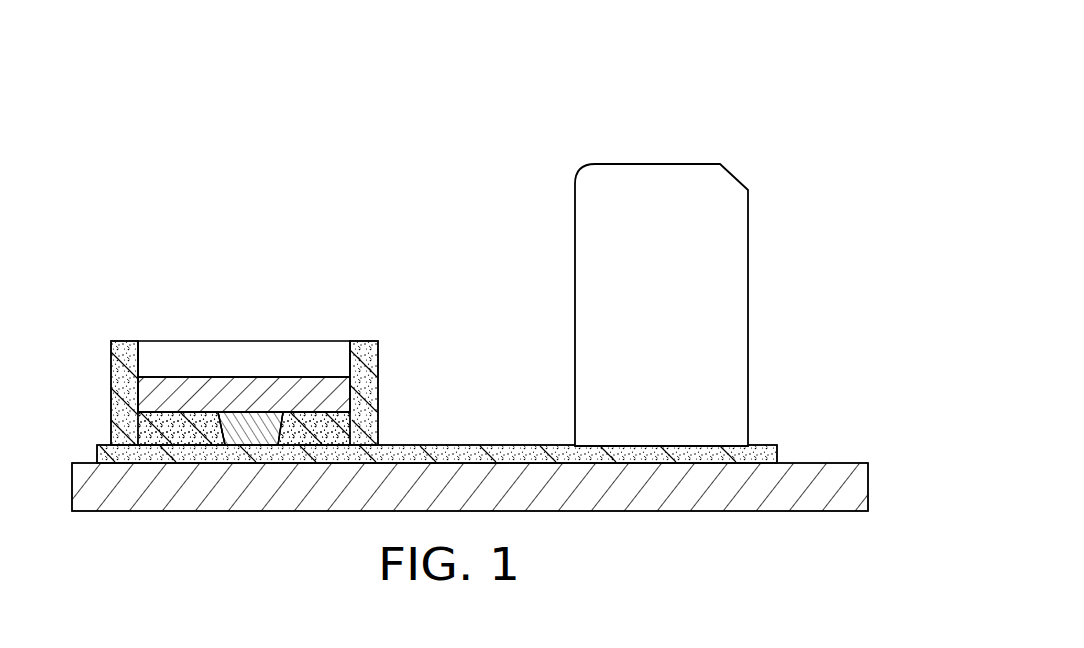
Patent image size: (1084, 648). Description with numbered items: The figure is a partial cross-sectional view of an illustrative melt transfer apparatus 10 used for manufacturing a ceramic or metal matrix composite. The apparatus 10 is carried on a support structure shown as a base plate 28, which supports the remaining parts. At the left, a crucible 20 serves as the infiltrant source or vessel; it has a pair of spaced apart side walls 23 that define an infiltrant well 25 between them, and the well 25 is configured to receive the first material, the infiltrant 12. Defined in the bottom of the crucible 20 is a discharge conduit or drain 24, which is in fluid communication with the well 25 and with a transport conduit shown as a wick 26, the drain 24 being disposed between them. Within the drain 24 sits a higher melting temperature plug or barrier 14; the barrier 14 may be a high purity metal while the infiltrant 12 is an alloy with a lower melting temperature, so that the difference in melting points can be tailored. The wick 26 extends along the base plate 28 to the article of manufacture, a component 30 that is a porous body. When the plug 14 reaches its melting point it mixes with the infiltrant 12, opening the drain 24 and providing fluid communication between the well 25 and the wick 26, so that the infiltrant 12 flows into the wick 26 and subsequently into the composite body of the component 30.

The apparatus 10 is at (472, 282).
The infiltrant 12 is at (188, 376).
The plug 14 is at (242, 412).
The crucible 20 is at (398, 397).
The side walls 23 is at (124, 342).
The discharge conduit 24 is at (252, 447).
The infiltrant well 25 is at (202, 350).
The wick 26 is at (763, 446).
The base plate 28 is at (838, 463).
The component 30 is at (633, 163).